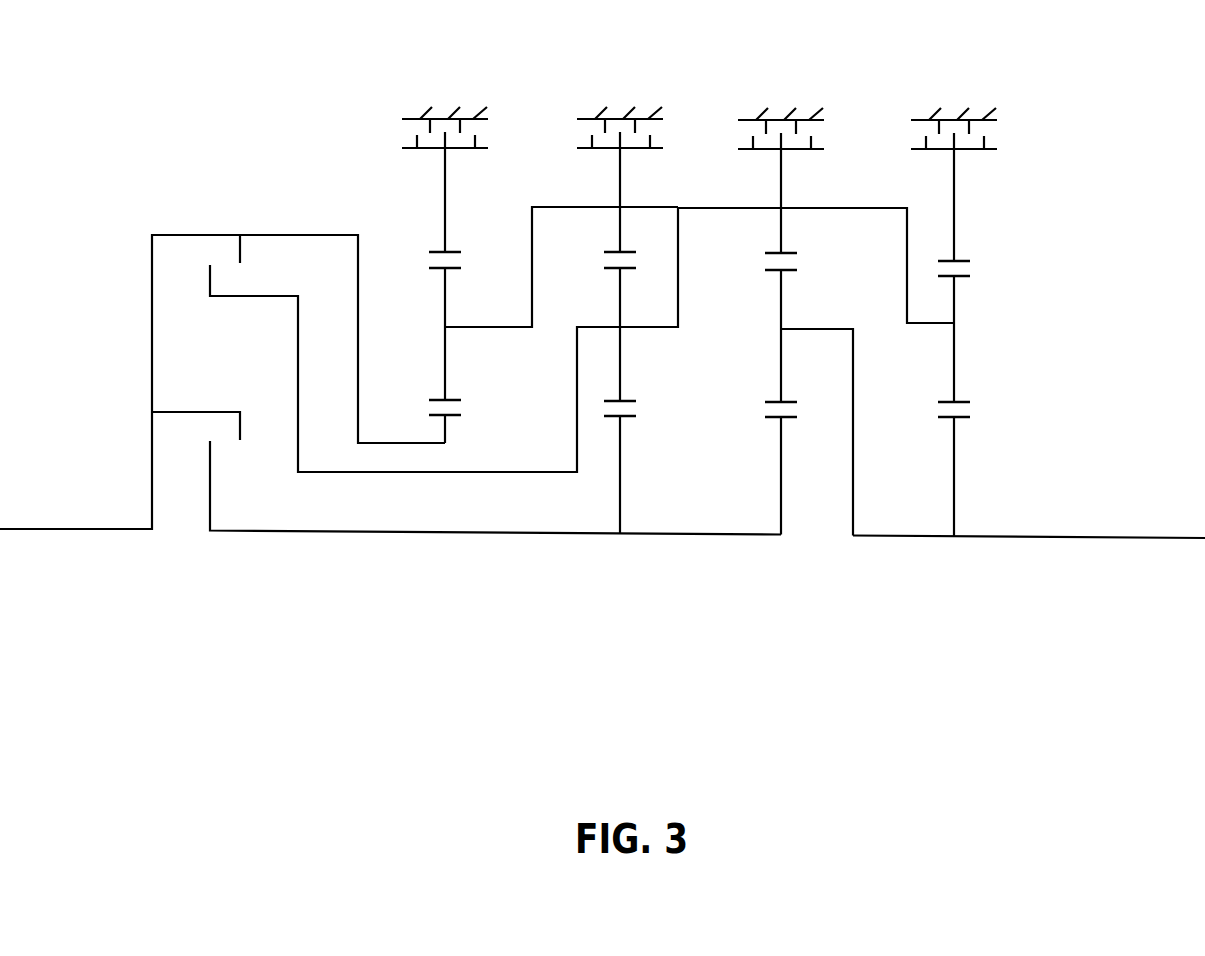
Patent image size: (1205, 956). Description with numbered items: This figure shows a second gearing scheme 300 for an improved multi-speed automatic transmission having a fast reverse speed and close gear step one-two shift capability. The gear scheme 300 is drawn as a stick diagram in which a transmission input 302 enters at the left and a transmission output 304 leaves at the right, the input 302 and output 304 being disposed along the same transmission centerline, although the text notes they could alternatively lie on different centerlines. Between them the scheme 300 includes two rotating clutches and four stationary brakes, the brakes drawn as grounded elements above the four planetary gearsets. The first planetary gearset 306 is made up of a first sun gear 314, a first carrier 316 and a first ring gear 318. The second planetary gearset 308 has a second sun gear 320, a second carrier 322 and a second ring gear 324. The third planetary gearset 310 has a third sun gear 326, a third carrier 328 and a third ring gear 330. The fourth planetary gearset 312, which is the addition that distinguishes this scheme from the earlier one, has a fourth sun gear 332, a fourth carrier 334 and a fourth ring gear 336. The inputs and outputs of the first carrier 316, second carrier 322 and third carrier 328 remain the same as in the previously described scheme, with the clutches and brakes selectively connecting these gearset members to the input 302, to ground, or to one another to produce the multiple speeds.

The gear scheme 300 is at (142, 111).
The transmission input 302 is at (15, 537).
The transmission output 304 is at (1125, 541).
The first planetary gearset 306 is at (447, 590).
The second planetary gearset 308 is at (623, 590).
The third planetary gearset 310 is at (780, 590).
The fourth planetary gearset 312 is at (952, 590).
The P1 sun gear 314 is at (447, 429).
The P1 carrier 316 is at (446, 302).
The P1 ring gear 318 is at (446, 191).
The P2 sun gear 320 is at (622, 455).
The P2 carrier 322 is at (622, 304).
The P2 ring gear 324 is at (622, 185).
The P3 sun gear 326 is at (782, 458).
The P3 carrier 328 is at (782, 352).
The P3 ring gear 330 is at (782, 228).
The P4 sun gear 332 is at (956, 462).
The P4 carrier 334 is at (955, 362).
The P4 ring gear 336 is at (955, 214).